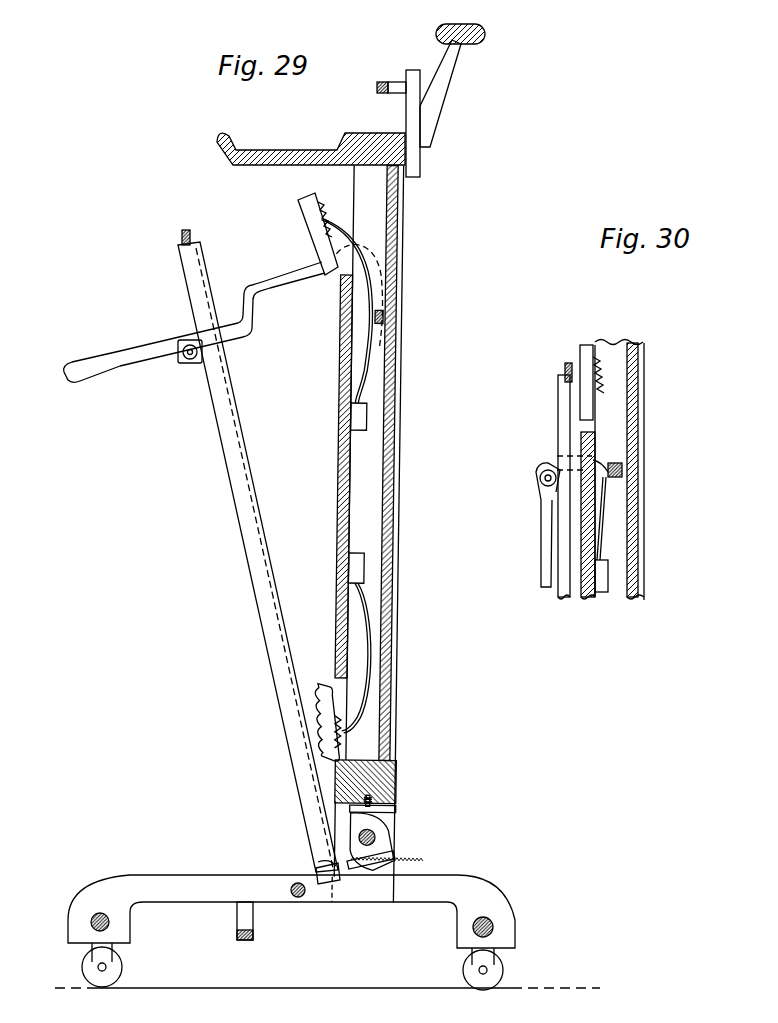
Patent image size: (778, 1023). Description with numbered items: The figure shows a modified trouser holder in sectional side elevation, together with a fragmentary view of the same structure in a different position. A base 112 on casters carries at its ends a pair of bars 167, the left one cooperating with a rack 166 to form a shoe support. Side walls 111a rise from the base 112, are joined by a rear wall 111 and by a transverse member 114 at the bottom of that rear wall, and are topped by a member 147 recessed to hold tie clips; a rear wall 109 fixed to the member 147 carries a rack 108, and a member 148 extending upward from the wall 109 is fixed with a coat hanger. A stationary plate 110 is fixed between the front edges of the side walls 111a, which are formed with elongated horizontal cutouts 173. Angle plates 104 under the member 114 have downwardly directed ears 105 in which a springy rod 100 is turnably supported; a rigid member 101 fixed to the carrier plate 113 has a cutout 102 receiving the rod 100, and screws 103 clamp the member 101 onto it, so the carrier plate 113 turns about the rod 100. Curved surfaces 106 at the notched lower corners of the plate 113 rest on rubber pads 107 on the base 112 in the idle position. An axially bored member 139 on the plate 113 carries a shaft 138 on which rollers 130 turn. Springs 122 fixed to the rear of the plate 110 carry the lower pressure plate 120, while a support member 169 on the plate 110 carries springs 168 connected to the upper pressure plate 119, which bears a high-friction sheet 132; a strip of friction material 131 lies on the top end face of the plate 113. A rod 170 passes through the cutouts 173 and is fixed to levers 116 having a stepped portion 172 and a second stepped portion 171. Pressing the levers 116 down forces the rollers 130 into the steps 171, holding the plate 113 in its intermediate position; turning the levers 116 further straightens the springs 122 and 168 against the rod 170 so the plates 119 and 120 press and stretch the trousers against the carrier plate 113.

In FIG. 29, the springy rod 100 is at (385, 838).
In FIG. 29, the rigid member 101 is at (356, 880).
In FIG. 29, the cutout 102 is at (383, 870).
In FIG. 29, the screws 103 is at (404, 858).
In FIG. 29, the angle plates 104 is at (389, 805).
In FIG. 29, the ear 105 is at (402, 815).
In FIG. 29, the curved surfaces 106 is at (316, 860).
In FIG. 29, the rubber pads 107 is at (322, 872).
In FIG. 29, the rack 108 is at (377, 85).
In FIG. 29, the rear wall 109 is at (417, 155).
In FIG. 29, the stationary plate 110 is at (345, 470).
In FIG. 30, the stationary plate 110 is at (588, 472).
In FIG. 29, the rear wall 111 is at (390, 494).
In FIG. 30, the rear wall 111 is at (640, 400).
In FIG. 29, the side walls 111a is at (378, 526).
In FIG. 29, the base 112 is at (456, 902).
In FIG. 29, the carrier plate 113 is at (256, 518).
In FIG. 30, the carrier plate 113 is at (565, 395).
In FIG. 29, the transverse member 114 is at (389, 776).
In FIG. 29, the levers 116 is at (288, 275).
In FIG. 30, the levers 116 is at (543, 545).
In FIG. 29, the upper pressure plate 119 is at (310, 203).
In FIG. 30, the upper pressure plate 119 is at (588, 344).
In FIG. 29, the lower pressure plate 120 is at (323, 688).
In FIG. 29, the springs 122 is at (370, 636).
In FIG. 29, the rollers 130 is at (186, 333).
In FIG. 30, the rollers 130 is at (548, 470).
In FIG. 29, the strip of friction material 131 is at (184, 229).
In FIG. 30, the strip of friction material 131 is at (564, 367).
In FIG. 29, the sheet 132 is at (305, 222).
In FIG. 30, the sheet 132 is at (580, 352).
In FIG. 29, the shaft 138 is at (182, 357).
In FIG. 29, the axially bored member 139 is at (191, 364).
In FIG. 30, the axially bored member 139 is at (548, 490).
In FIG. 29, the member 147 is at (352, 140).
In FIG. 29, the member 148 is at (452, 57).
In FIG. 29, the rack 166 is at (248, 942).
In FIG. 29, the bars 167 is at (110, 925).
In FIG. 29, the springs 168 is at (370, 348).
In FIG. 30, the springs 168 is at (602, 530).
In FIG. 29, the support member 169 is at (351, 418).
In FIG. 30, the support member 169 is at (600, 585).
In FIG. 29, the rod 170 is at (380, 320).
In FIG. 30, the rod 170 is at (622, 478).
In FIG. 29, the stepped portion 171 is at (246, 285).
In FIG. 29, the stepped portion 172 is at (356, 252).
In FIG. 30, the stepped portion 172 is at (540, 470).
In FIG. 29, the cutouts 173 is at (356, 316).
In FIG. 30, the cutouts 173 is at (625, 475).